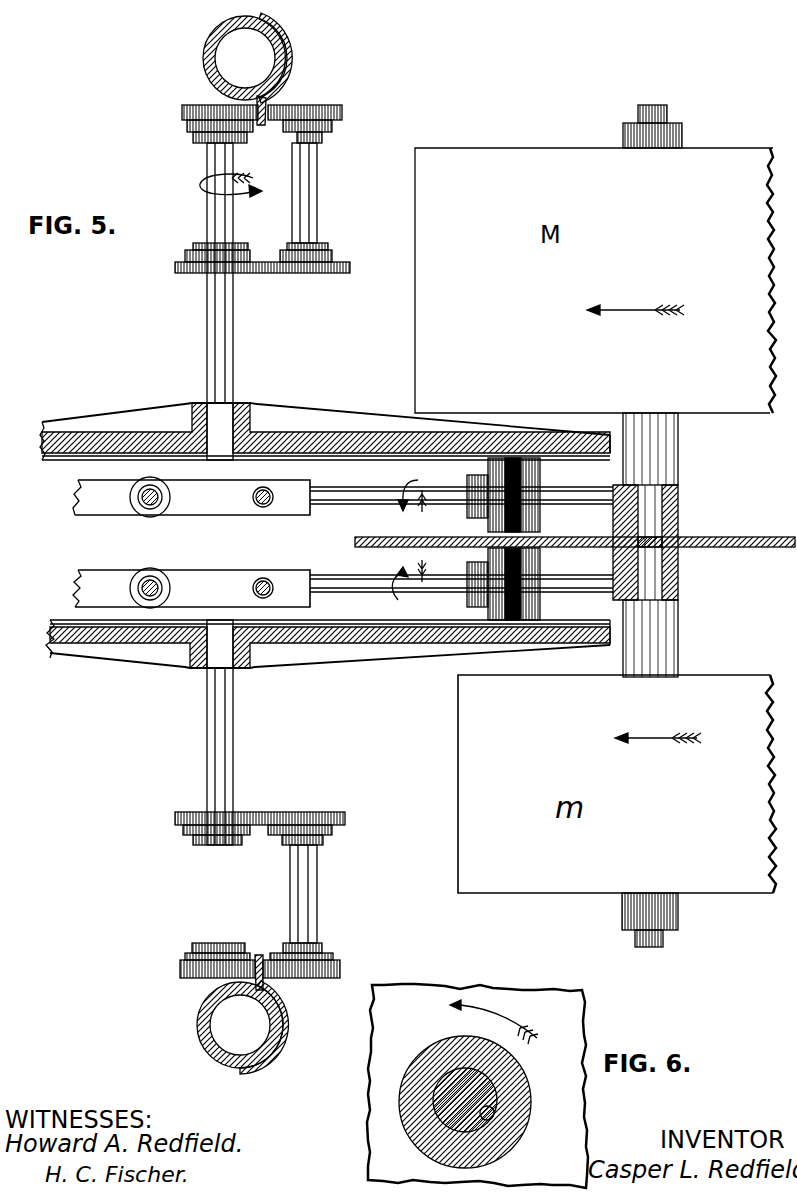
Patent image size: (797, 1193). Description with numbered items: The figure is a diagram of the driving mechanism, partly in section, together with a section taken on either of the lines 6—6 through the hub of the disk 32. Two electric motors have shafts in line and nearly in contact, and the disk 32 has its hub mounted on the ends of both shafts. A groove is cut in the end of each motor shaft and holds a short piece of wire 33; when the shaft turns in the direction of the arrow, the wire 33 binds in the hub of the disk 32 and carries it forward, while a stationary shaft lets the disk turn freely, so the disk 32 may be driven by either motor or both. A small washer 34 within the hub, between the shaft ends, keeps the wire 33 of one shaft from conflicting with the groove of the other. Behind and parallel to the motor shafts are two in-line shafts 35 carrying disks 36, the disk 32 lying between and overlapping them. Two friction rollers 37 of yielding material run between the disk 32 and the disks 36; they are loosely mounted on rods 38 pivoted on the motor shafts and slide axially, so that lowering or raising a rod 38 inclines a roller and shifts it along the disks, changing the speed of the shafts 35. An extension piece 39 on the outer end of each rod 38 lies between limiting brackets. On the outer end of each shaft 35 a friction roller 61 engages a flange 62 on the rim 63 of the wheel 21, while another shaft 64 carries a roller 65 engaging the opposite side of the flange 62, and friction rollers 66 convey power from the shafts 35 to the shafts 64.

In FIG. 5, the wheel 21 is at (203, 58).
In FIG. 5, the rim 63 is at (288, 44).
In FIG. 5, the flange 62 is at (268, 104).
In FIG. 5, the friction roller 61 is at (182, 112).
In FIG. 5, the roller 65 is at (343, 112).
In FIG. 5, the shaft 64 is at (318, 190).
In FIG. 5, the shaft 35 is at (207, 306).
In FIG. 5, the friction roller 66 is at (292, 275).
In FIG. 5, the disk 36 is at (357, 432).
In FIG. 5, the extension piece 39 is at (238, 516).
In FIG. 5, the rod 38 is at (378, 594).
In FIG. 5, the friction roller 37 is at (541, 606).
In FIG. 5, the disk 32 is at (355, 542).
In FIG. 6, the disk 32 is at (585, 1010).
In FIG. 5, the washer 34 is at (660, 552).
In FIG. 5, the section line 6 is at (742, 563).
In FIG. 6, the wire 33 is at (493, 1117).